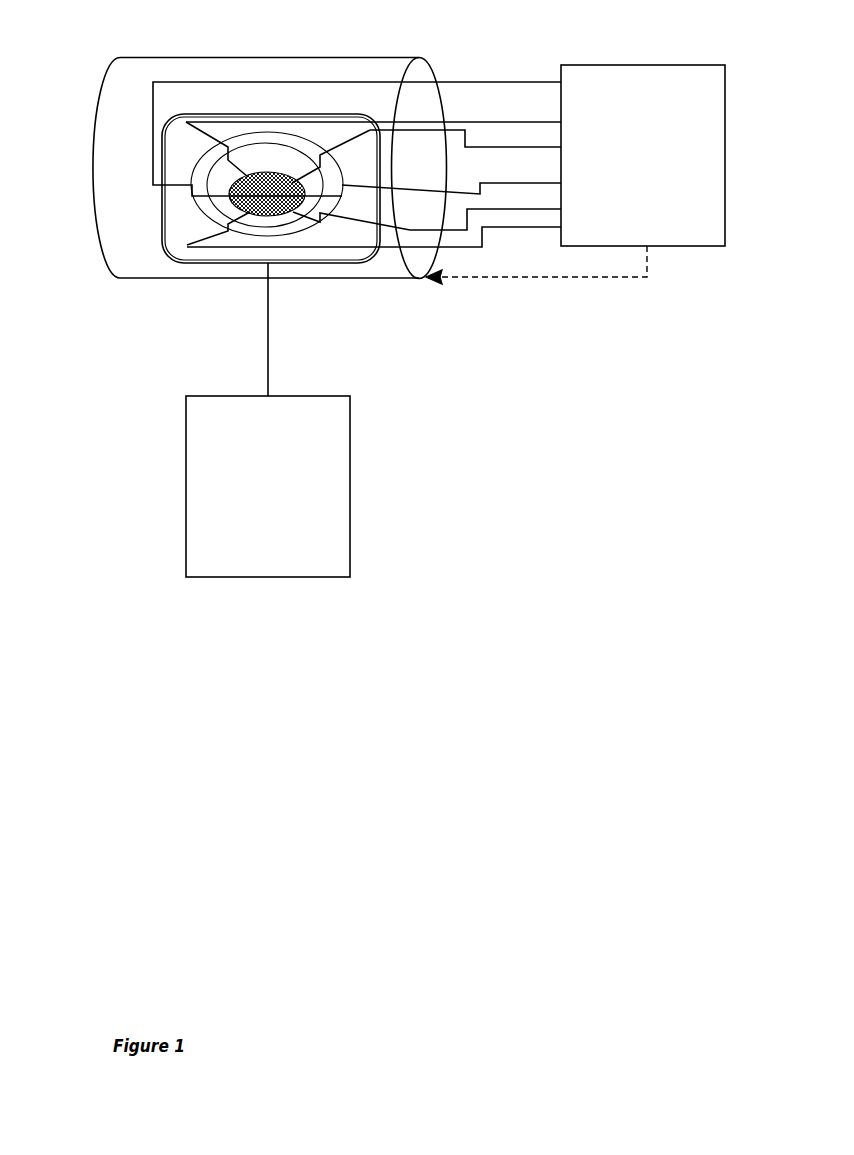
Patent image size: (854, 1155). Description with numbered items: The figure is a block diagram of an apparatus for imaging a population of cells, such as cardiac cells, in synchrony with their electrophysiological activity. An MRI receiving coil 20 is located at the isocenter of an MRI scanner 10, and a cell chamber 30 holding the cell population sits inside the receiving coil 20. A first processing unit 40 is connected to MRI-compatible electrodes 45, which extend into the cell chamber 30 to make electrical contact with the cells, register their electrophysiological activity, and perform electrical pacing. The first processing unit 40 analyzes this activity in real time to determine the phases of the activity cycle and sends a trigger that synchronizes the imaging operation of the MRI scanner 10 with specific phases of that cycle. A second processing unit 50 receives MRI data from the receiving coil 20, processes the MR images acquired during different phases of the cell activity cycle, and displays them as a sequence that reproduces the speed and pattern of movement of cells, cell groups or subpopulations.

The MRI scanner 10 is at (93, 155).
The MRI receiving coil 20 is at (163, 198).
The cell chamber 30 is at (200, 216).
The first processing unit 40 is at (725, 158).
The MRI-compatible electrodes 45 is at (373, 152).
The second processing unit 50 is at (186, 495).